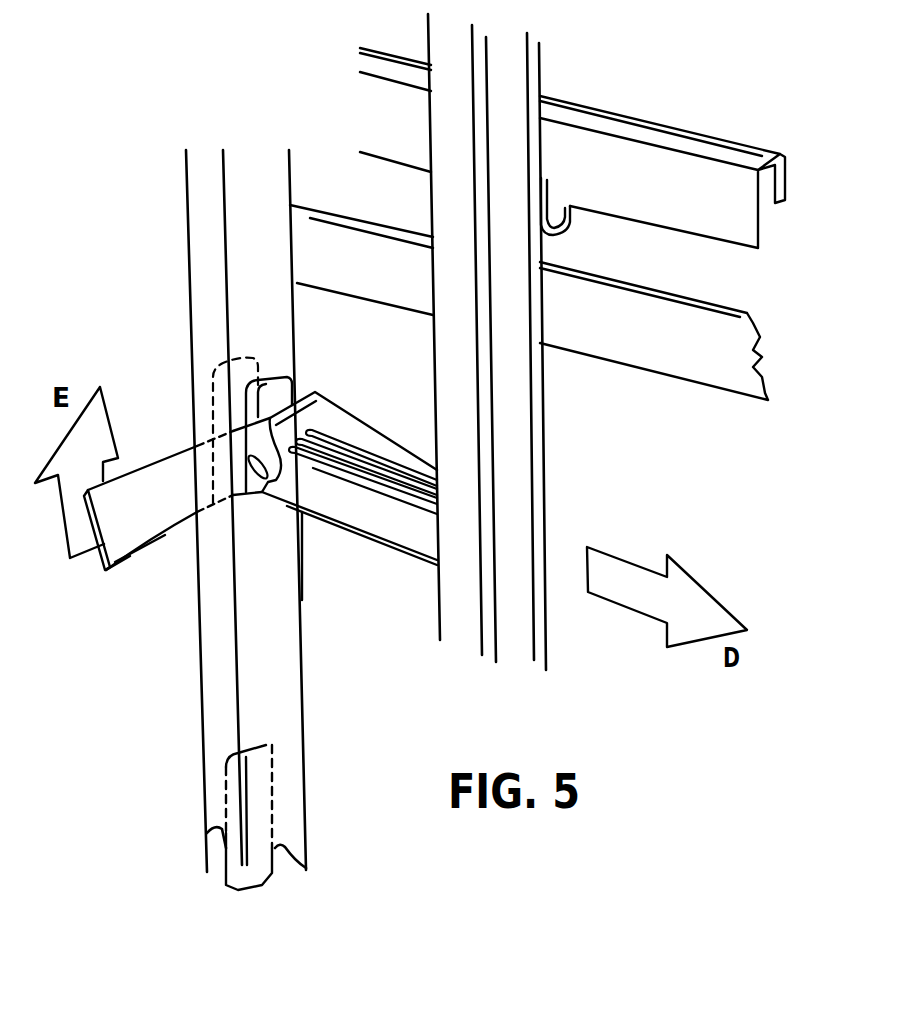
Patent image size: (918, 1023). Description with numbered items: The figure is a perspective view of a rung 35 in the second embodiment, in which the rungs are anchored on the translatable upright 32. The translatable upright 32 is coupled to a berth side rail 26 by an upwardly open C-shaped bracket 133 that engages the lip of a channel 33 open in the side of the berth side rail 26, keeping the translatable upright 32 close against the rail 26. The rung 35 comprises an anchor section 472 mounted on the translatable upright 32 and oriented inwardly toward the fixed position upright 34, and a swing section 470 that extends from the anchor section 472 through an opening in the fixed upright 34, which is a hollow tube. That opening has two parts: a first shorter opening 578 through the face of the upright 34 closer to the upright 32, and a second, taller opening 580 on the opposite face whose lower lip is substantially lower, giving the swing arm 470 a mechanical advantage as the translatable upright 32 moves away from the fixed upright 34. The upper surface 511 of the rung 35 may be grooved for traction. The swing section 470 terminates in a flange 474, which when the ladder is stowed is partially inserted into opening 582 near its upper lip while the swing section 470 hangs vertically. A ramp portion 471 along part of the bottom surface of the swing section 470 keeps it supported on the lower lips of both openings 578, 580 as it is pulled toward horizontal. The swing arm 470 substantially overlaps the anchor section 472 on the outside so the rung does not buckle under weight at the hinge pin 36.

The berth side rail 26 is at (768, 152).
The translatable upright 32 is at (544, 480).
The channel 33 is at (708, 242).
The fixed position upright 34 is at (296, 333).
The rung 35 is at (400, 545).
The hinge pin 36 is at (268, 482).
The C-shaped bracket 133 is at (570, 232).
The swing section 470 is at (148, 513).
The ramp portion 471 is at (127, 545).
The anchor section 472 is at (336, 447).
The flange 474 is at (110, 567).
The upper surface 511 is at (373, 458).
The first shorter opening 578 is at (300, 385).
The second taller opening 580 is at (213, 425).
The opening 582 is at (250, 888).